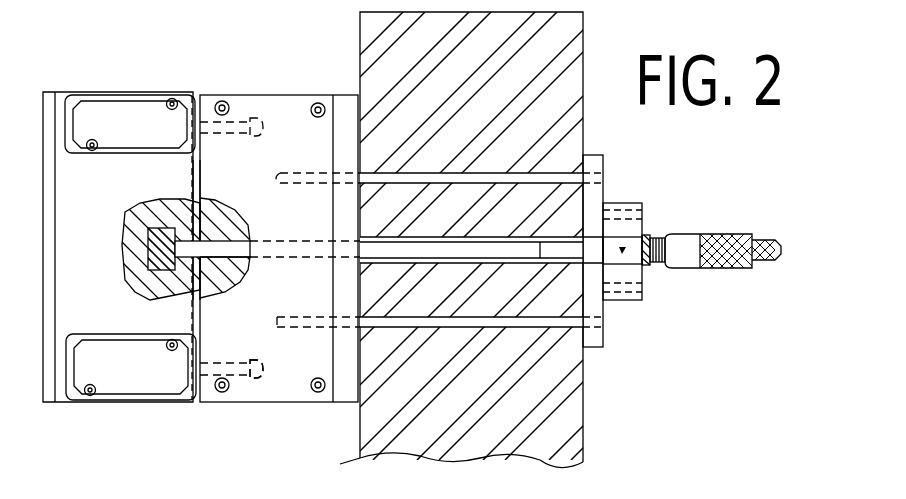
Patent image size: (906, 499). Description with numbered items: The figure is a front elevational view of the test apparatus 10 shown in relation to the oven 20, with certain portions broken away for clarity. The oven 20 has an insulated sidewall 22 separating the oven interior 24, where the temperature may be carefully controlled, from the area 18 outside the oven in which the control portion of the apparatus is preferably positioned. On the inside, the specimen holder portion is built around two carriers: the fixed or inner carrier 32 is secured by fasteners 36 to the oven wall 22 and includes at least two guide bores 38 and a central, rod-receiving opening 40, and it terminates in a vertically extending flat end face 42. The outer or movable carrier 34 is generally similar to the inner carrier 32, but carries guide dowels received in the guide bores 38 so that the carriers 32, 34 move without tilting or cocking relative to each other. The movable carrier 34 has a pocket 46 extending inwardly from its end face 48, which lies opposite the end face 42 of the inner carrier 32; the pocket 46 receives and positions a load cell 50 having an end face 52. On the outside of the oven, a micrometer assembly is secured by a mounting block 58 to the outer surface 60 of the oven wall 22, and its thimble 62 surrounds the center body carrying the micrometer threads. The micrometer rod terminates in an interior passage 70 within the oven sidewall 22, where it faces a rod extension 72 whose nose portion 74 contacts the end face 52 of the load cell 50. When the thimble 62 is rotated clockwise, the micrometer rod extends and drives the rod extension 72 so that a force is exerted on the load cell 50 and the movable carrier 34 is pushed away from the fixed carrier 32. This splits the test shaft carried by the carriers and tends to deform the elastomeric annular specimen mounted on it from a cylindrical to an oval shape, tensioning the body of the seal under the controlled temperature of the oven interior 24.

The test apparatus 10 is at (713, 253).
The area outside the oven 18 is at (680, 163).
The oven 20 is at (354, 56).
The insulated sidewall 22 is at (478, 420).
The oven interior 24 is at (315, 445).
The inner carrier 32 is at (240, 177).
The outer carrier 34 is at (160, 245).
The fasteners 36 is at (347, 180).
The guide bores 38 is at (235, 372).
The rod-receiving opening 40 is at (330, 256).
The end face 42 is at (193, 158).
The pocket 46 is at (188, 286).
The end face 48 is at (197, 172).
The load cell 50 is at (150, 245).
The end face 52 is at (150, 280).
The mounting block 58 is at (615, 270).
The outer surface 60 is at (585, 135).
The thimble 62 is at (688, 238).
The interior passage 70 is at (332, 250).
The rod extension 72 is at (218, 284).
The nose portion 74 is at (160, 228).